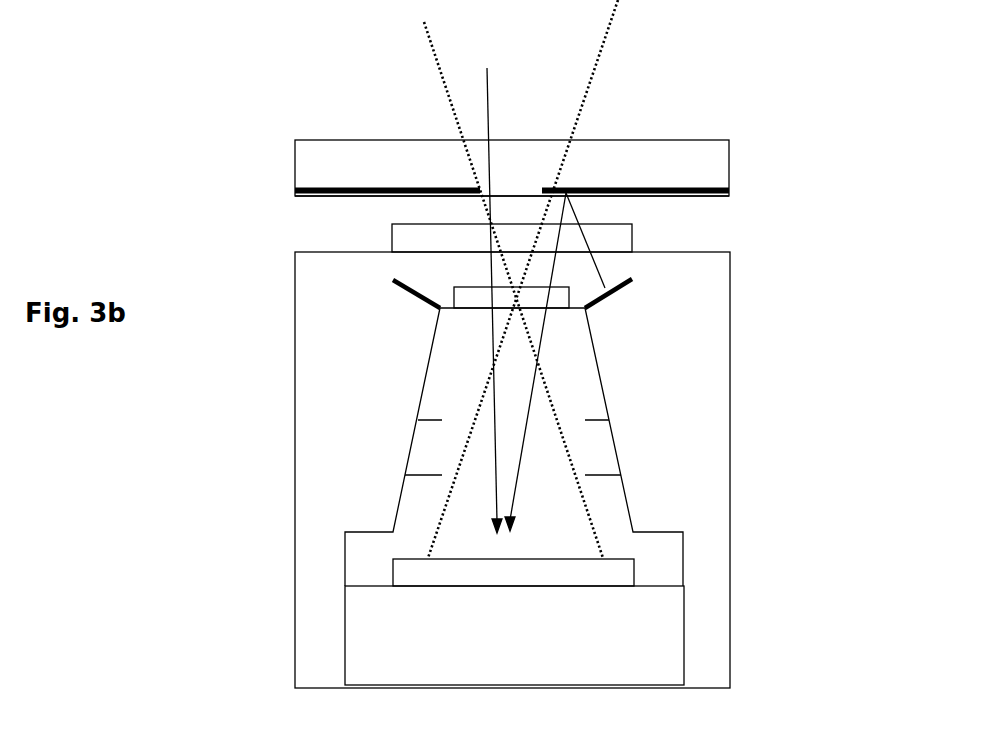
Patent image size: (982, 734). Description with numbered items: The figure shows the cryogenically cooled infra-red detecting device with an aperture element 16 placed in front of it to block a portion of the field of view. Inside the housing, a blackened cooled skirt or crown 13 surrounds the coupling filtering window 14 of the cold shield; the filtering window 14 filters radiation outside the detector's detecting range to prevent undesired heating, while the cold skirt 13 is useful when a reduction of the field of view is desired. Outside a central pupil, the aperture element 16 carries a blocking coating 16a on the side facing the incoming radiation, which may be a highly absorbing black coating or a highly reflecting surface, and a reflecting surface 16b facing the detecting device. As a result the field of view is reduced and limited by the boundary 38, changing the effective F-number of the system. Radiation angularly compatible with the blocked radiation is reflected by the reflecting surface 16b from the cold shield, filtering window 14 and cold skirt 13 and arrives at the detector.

The cold skirt 13 is at (403, 293).
The filtering window 14 is at (438, 306).
The aperture element 16 is at (698, 139).
The blocking coating 16a is at (685, 187).
The reflecting surface 16b is at (702, 192).
The boundary 38 is at (434, 58).